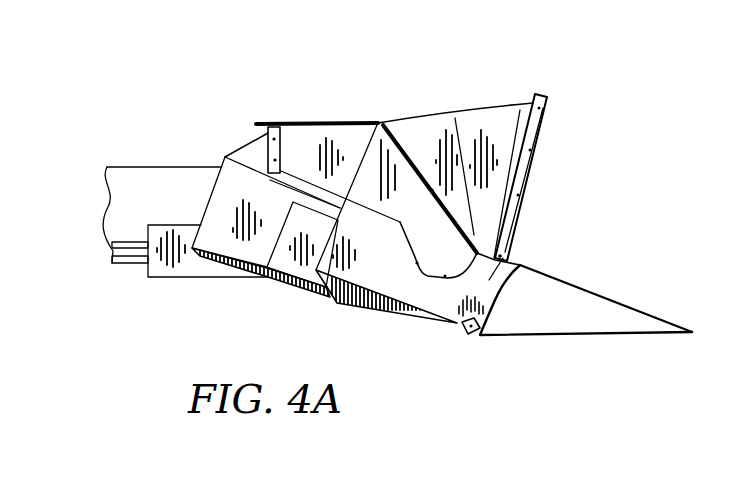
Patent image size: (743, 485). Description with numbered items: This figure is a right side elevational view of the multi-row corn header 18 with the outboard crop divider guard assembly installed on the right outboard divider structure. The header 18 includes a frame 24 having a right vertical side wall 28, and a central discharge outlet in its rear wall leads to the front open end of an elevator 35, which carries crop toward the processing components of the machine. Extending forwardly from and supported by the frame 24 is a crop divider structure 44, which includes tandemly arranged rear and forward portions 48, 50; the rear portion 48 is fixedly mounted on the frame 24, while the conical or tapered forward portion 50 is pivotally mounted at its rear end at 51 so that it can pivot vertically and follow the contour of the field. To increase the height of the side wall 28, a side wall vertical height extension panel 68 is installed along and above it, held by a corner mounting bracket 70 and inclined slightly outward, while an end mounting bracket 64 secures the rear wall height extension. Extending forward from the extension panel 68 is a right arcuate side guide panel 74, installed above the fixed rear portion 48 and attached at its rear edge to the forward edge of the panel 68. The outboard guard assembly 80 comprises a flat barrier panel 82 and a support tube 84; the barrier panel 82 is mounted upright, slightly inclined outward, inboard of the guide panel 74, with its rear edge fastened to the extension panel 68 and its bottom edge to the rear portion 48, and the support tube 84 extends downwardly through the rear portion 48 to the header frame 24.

The multi-row corn header 18 is at (535, 201).
The frame 24 is at (302, 304).
The right vertical side wall 28 is at (256, 194).
The elevator 35 is at (171, 188).
The crop divider structure 44 is at (580, 276).
The rear portion 48 is at (511, 263).
The forward portion 50 is at (642, 320).
The pivot mounting 51 is at (466, 334).
The end mounting bracket 64 is at (243, 148).
The right side wall vertical height extension panel 68 is at (320, 152).
The corner mounting bracket 70 is at (288, 128).
The right arcuate side guide panel 74 is at (442, 246).
The outboard guard assembly 80 is at (492, 103).
The barrier panel 82 is at (516, 139).
The support tube 84 is at (529, 158).